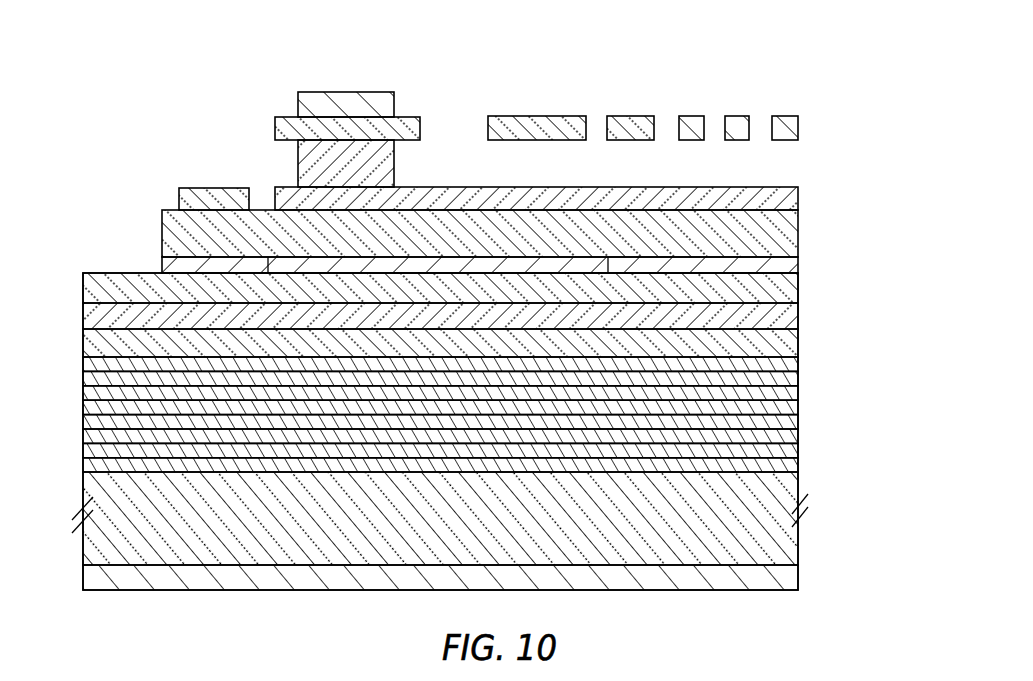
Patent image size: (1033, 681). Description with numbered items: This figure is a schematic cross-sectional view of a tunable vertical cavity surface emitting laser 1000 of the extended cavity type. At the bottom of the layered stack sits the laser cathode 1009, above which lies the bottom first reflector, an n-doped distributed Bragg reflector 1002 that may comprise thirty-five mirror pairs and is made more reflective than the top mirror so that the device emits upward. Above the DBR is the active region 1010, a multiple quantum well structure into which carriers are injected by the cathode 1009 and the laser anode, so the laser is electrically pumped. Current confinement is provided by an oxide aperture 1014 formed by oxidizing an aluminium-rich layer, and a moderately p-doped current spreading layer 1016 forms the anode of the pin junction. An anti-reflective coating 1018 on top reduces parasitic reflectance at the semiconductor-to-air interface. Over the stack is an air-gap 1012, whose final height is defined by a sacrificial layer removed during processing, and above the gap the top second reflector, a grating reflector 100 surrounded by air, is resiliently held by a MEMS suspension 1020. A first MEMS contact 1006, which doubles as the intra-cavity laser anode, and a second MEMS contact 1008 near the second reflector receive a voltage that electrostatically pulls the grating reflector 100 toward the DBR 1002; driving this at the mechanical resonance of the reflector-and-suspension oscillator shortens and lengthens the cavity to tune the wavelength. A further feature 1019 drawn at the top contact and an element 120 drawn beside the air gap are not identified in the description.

The tunable vertical cavity surface emitting laser 1000 is at (834, 75).
The distributed Bragg reflector 1002 is at (809, 413).
The first MEMS contact 1006 is at (217, 198).
The second MEMS contact 1008 is at (335, 105).
The laser cathode 1009 is at (790, 585).
The active region 1010 is at (783, 317).
The air-gap 1012 is at (672, 175).
The oxide aperture 1014 is at (785, 268).
The current spreading layer 1016 is at (758, 230).
The anti-reflective coating 1018 is at (750, 198).
The electrode post 1019 is at (328, 161).
The suspension 1020 is at (540, 132).
The element 120 is at (596, 71).
The grating reflector 100 is at (780, 128).